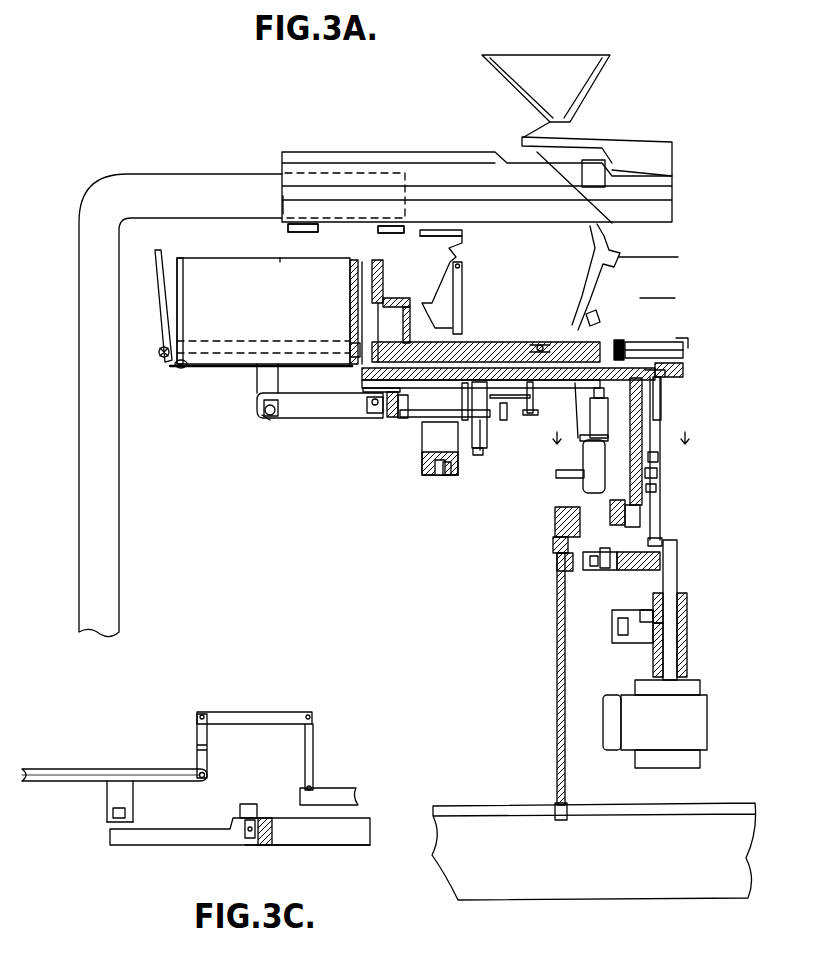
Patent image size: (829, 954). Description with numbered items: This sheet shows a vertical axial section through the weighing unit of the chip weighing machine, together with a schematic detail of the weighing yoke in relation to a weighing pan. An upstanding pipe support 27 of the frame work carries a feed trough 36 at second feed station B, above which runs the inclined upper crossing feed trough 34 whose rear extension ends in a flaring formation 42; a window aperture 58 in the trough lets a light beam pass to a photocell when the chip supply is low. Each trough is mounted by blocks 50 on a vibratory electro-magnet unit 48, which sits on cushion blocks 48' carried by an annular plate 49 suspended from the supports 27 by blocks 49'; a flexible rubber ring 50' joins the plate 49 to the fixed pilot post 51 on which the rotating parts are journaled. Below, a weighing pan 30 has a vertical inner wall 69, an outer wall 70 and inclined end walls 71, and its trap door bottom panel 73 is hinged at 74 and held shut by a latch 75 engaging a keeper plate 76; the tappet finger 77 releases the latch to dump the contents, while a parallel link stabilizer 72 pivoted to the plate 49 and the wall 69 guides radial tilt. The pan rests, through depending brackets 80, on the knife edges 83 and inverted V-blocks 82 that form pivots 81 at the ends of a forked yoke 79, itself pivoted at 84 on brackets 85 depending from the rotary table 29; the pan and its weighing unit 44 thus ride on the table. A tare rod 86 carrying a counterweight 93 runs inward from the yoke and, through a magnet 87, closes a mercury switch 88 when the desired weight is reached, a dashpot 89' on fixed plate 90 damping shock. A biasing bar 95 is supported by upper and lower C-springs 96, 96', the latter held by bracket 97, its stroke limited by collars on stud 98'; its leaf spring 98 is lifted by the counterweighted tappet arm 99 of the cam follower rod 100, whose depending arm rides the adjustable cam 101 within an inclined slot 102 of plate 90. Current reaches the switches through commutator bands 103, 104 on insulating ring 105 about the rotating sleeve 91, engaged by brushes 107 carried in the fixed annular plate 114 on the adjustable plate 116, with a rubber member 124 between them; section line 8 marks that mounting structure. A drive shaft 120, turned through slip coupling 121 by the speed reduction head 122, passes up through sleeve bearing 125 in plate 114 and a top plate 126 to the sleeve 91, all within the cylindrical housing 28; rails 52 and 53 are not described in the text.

In FIG. 3A, the upstanding pipe legs or supports 27 is at (178, 183).
In FIG. 3A, the feed trough 36 is at (366, 165).
In FIG. 3A, the crossing feed member or upper trough 34 is at (628, 130).
In FIG. 3A, the flaring rear formation 42 is at (597, 82).
In FIG. 3A, the window aperture 58 is at (604, 184).
In FIG. 3A, the mounting blocks 50 is at (411, 168).
In FIG. 3A, the suspension blocks 49' is at (508, 234).
In FIG. 3A, the second feed station B is at (283, 205).
In FIG. 3A, the weighing pan 30 is at (168, 304).
In FIG. 3C, the weighing pan 30 is at (152, 759).
In FIG. 3A, the tappet finger 77 is at (153, 270).
In FIG. 3A, the outer side wall 70 is at (182, 340).
In FIG. 3A, the latch 75 is at (163, 358).
In FIG. 3A, the keeper plate 76 is at (181, 368).
In FIG. 3A, the bottom panel 73 is at (237, 366).
In FIG. 3C, the bottom panel 73 is at (82, 782).
In FIG. 3A, the rail 52 is at (295, 235).
In FIG. 3A, the end wall 71 is at (278, 287).
In FIG. 3A, the rail 53 is at (352, 235).
In FIG. 3A, the inner side wall 69 is at (350, 300).
In FIG. 3C, the inner side wall 69 is at (207, 738).
In FIG. 3A, the depending brackets 85 is at (337, 326).
In FIG. 3C, the depending brackets 85 is at (258, 781).
In FIG. 3A, the hinge 74 is at (365, 354).
In FIG. 3C, the hinge 74 is at (207, 774).
In FIG. 3A, the parallel link stabilizer 72 is at (462, 290).
In FIG. 3C, the parallel link stabilizer 72 is at (306, 706).
In FIG. 3A, the cushion blocks 48' is at (466, 285).
In FIG. 3A, the annular plate 49 is at (486, 334).
In FIG. 3C, the annular plate 49 is at (336, 774).
In FIG. 3A, the stud 98' is at (551, 329).
In FIG. 3A, the counterweighted tappet arm 99 is at (592, 328).
In FIG. 3A, the vibratory electro-magnet unit 48 is at (625, 277).
In FIG. 3A, the flexible rubber vibration absorbing ring 50' is at (646, 335).
In FIG. 3A, the pilot post 51 is at (690, 362).
In FIG. 3A, the mercury type switch 88 is at (650, 388).
In FIG. 3A, the rotating sleeve-like support 91 is at (660, 425).
In FIG. 3A, the weighing unit 44 is at (418, 466).
In FIG. 3C, the weighing unit 44 is at (186, 857).
In FIG. 3A, the rotary weighing table or plate 29 is at (385, 385).
In FIG. 3A, the depending lugs or brackets 80 is at (275, 388).
In FIG. 3C, the depending lugs or brackets 80 is at (136, 793).
In FIG. 3A, the forked frame or yoke 79 is at (388, 412).
In FIG. 3C, the forked frame or yoke 79 is at (202, 830).
In FIG. 3A, the knife edge 83 is at (280, 408).
In FIG. 3C, the knife edge 83 is at (125, 832).
In FIG. 3A, the inverted V-block 82 is at (265, 410).
In FIG. 3C, the inverted V-block 82 is at (127, 815).
In FIG. 3A, the pivotal mount 81 is at (267, 419).
In FIG. 3A, the frame pivot 84 is at (372, 410).
In FIG. 3C, the frame pivot 84 is at (250, 836).
In FIG. 3A, the tare rod 86 is at (398, 416).
In FIG. 3A, the counterweight 93 is at (435, 478).
In FIG. 3A, the lower looped compensating spring 96' is at (455, 482).
In FIG. 3A, the upper looped compensating spring 96 is at (478, 398).
In FIG. 3A, the leaf spring 98 is at (490, 426).
In FIG. 3A, the rigid supporting bracket 97 is at (482, 452).
In FIG. 3A, the biasing bar 95 is at (528, 415).
In FIG. 3A, the section line of FIGURE 8 is at (622, 436).
In FIG. 3A, the angled cam follower rod 100 is at (578, 448).
In FIG. 3A, the inclined slot 102 is at (562, 488).
In FIG. 3A, the magnet 87 is at (562, 462).
In FIG. 3A, the control cam 101 is at (555, 520).
In FIG. 3A, the brush 107 is at (565, 545).
In FIG. 3A, the rotatably adjustable supporting plate 116 is at (562, 570).
In FIG. 3A, the oil dampening dashpot 89' is at (692, 448).
In FIG. 3A, the fixed plate 90 is at (658, 474).
In FIG. 3A, the fixed annular plate 114 is at (656, 488).
In FIG. 3A, the continuous commutator band 103 is at (666, 511).
In FIG. 3A, the insulating ring 105 is at (660, 527).
In FIG. 3A, the top plate 126 is at (662, 542).
In FIG. 3A, the sleeve bearing 125 is at (668, 560).
In FIG. 3A, the sectional commutator band 104 is at (616, 560).
In FIG. 3A, the annular flexible vibration absorbing member 124 is at (592, 580).
In FIG. 3A, the upright drive shaft 120 is at (680, 580).
In FIG. 3A, the slip coupling 121 is at (687, 640).
In FIG. 3A, the speed reduction head 122 is at (695, 708).
In FIG. 3A, the cylindrical housing 28 is at (555, 700).